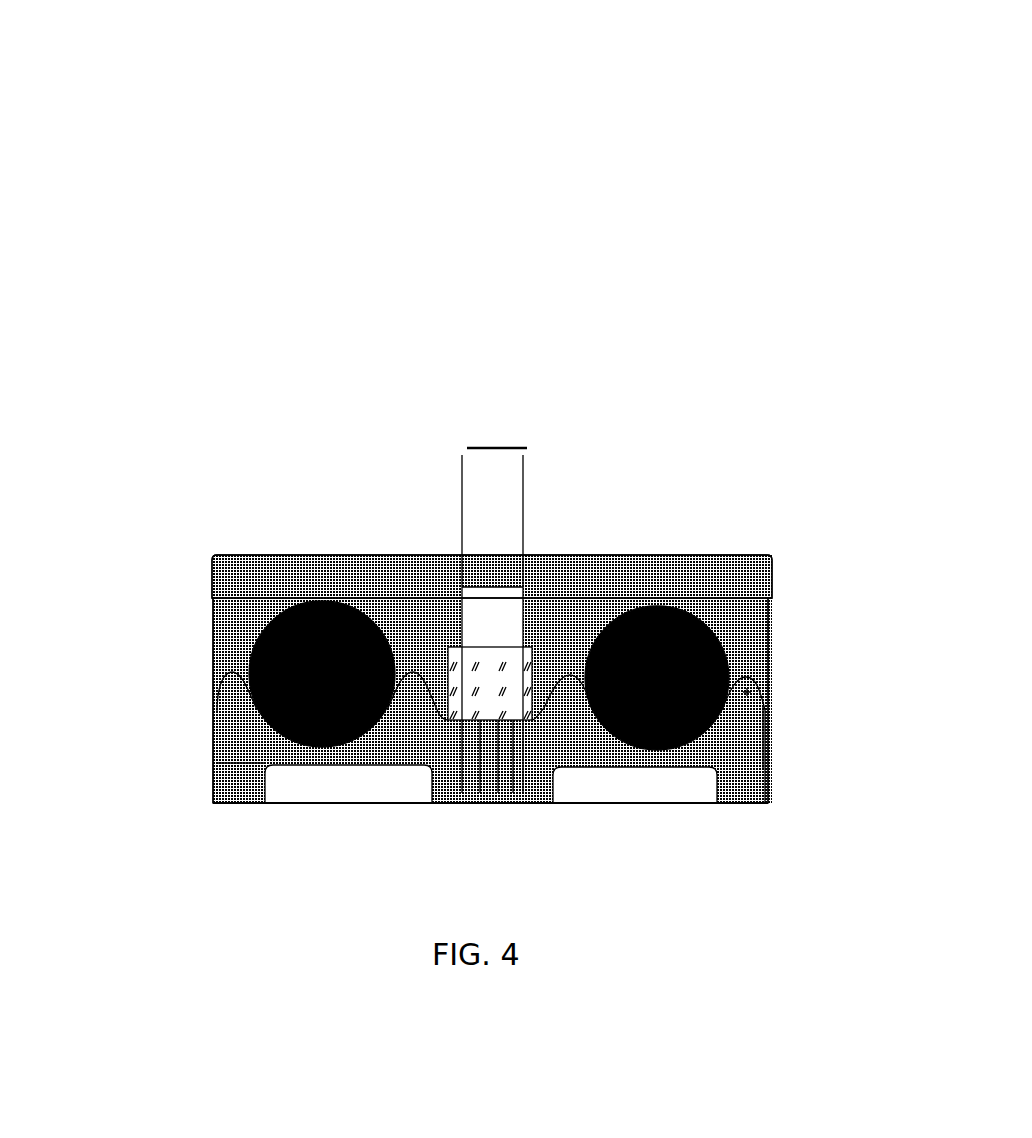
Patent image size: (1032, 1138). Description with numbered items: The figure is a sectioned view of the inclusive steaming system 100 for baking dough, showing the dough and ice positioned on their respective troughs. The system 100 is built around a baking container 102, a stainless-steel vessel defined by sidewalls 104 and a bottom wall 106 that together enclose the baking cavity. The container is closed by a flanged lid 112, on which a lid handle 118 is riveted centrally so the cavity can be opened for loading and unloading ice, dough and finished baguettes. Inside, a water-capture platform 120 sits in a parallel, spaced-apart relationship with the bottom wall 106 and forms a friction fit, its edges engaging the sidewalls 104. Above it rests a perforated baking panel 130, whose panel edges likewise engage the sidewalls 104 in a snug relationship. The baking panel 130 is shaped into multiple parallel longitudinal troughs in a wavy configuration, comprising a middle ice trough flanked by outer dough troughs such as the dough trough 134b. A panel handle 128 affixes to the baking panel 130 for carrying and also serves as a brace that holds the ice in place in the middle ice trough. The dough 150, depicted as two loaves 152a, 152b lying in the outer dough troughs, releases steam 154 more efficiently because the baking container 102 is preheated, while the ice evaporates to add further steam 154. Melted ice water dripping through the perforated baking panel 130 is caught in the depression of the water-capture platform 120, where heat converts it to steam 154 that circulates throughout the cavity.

The inclusive steaming system 100 is at (100, 103).
The baking container 102 is at (210, 660).
The sidewalls 104 is at (770, 762).
The bottom wall 106 is at (238, 802).
The flanged lid 112 is at (600, 558).
The lid handle 118 is at (525, 477).
The water-capture platform 120 is at (723, 800).
The panel handle 128 is at (458, 583).
The perforated baking panel 130 is at (237, 732).
The dough trough 134b is at (770, 693).
The dough 150 is at (527, 650).
The dough 152a is at (292, 603).
The second conductor 152b is at (720, 637).
The steam 154 is at (422, 613).